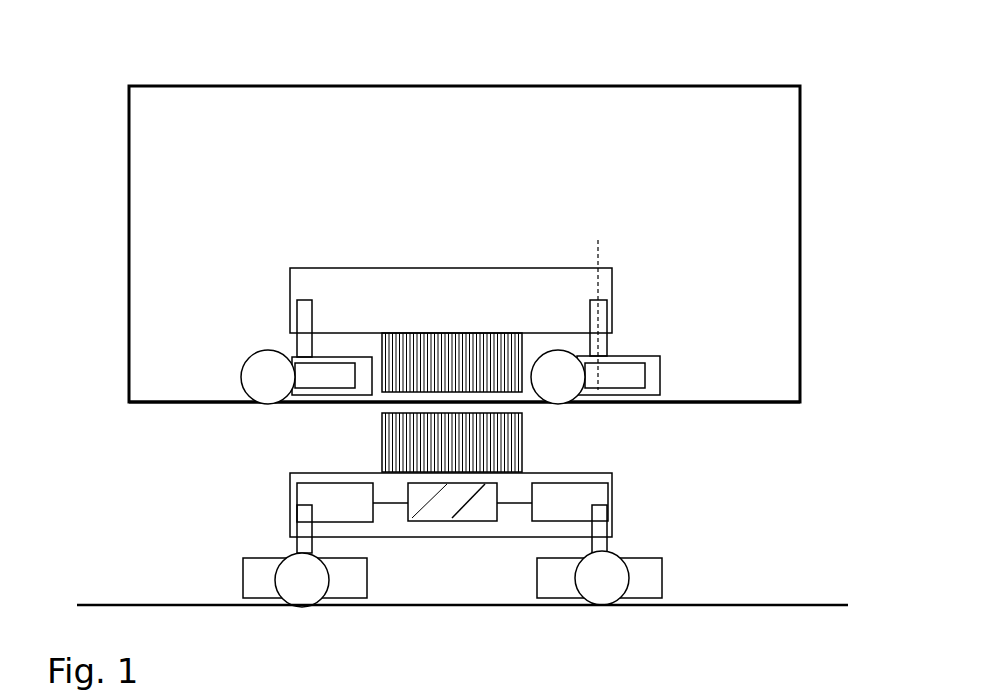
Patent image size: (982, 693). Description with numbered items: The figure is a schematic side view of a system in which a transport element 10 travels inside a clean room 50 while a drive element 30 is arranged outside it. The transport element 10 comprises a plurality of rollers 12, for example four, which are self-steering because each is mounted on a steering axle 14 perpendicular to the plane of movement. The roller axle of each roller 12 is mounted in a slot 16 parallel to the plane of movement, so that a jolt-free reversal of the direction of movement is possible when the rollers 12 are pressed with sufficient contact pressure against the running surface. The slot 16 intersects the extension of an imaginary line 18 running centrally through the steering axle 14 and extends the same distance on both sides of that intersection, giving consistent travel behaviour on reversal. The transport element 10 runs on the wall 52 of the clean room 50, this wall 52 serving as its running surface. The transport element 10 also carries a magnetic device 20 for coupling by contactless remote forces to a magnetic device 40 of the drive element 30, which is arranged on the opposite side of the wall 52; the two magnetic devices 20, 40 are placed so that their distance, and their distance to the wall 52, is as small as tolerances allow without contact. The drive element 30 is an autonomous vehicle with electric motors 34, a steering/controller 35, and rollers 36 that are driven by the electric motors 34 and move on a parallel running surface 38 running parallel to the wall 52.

The transport element 10 is at (360, 278).
The rollers 12 is at (265, 377).
The steering axle 14 is at (302, 317).
The slot 16 is at (630, 370).
The imaginary line 18 is at (602, 258).
The magnetic device 20 is at (455, 350).
The drive element 30 is at (655, 488).
The electric motors 34 is at (600, 493).
The steering/controller 35 is at (437, 515).
The rollers 36 is at (608, 578).
The parallel running surface 38 is at (767, 603).
The magnetic device 40 is at (392, 443).
The clean room 50 is at (145, 140).
The wall 52 is at (160, 405).